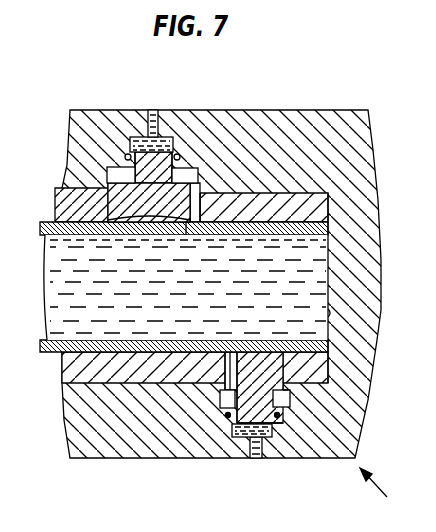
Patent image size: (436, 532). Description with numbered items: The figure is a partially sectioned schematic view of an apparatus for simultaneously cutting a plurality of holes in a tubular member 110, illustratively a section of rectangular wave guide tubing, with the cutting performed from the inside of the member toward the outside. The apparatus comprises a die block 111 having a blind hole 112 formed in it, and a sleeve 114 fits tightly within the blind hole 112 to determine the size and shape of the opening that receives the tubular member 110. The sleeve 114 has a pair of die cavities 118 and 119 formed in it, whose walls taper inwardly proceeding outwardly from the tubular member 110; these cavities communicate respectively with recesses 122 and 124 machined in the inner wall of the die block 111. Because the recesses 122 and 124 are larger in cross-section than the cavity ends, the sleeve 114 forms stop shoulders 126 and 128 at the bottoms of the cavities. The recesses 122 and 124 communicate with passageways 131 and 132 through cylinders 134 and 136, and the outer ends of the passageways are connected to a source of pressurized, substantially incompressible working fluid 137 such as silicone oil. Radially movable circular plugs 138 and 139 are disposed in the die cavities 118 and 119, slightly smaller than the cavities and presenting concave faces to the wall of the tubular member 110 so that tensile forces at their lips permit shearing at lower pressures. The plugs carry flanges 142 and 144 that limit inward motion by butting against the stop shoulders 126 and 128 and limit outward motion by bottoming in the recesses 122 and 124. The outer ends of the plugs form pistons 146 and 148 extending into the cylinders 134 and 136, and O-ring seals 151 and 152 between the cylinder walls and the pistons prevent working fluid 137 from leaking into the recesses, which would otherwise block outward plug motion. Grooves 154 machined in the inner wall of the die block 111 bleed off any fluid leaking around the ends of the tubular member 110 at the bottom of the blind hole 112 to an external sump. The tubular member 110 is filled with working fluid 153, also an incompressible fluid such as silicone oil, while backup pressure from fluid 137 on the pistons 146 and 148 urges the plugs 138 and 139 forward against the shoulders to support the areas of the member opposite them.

The tubular member 110 is at (102, 338).
The die block 111 is at (392, 489).
The blind hole 112 is at (330, 313).
The sleeve 114 is at (318, 212).
The die cavity 118 is at (188, 222).
The die cavity 119 is at (226, 374).
The recess 122 is at (197, 165).
The recess 124 is at (222, 404).
The stop shoulder 126 is at (202, 193).
The stop shoulder 128 is at (296, 376).
The passageway 131 is at (160, 128).
The passageway 132 is at (243, 438).
The cylinder 134 is at (140, 177).
The cylinder 136 is at (228, 416).
The working fluid 137 is at (153, 110).
The plug 138 is at (115, 222).
The plug 139 is at (250, 357).
The flange 142 is at (110, 173).
The flange 144 is at (284, 407).
The piston 146 is at (126, 160).
The piston 148 is at (272, 438).
The seal 151 is at (178, 168).
The seal 152 is at (286, 440).
The working fluid 153 is at (188, 286).
The groove 154 is at (60, 188).